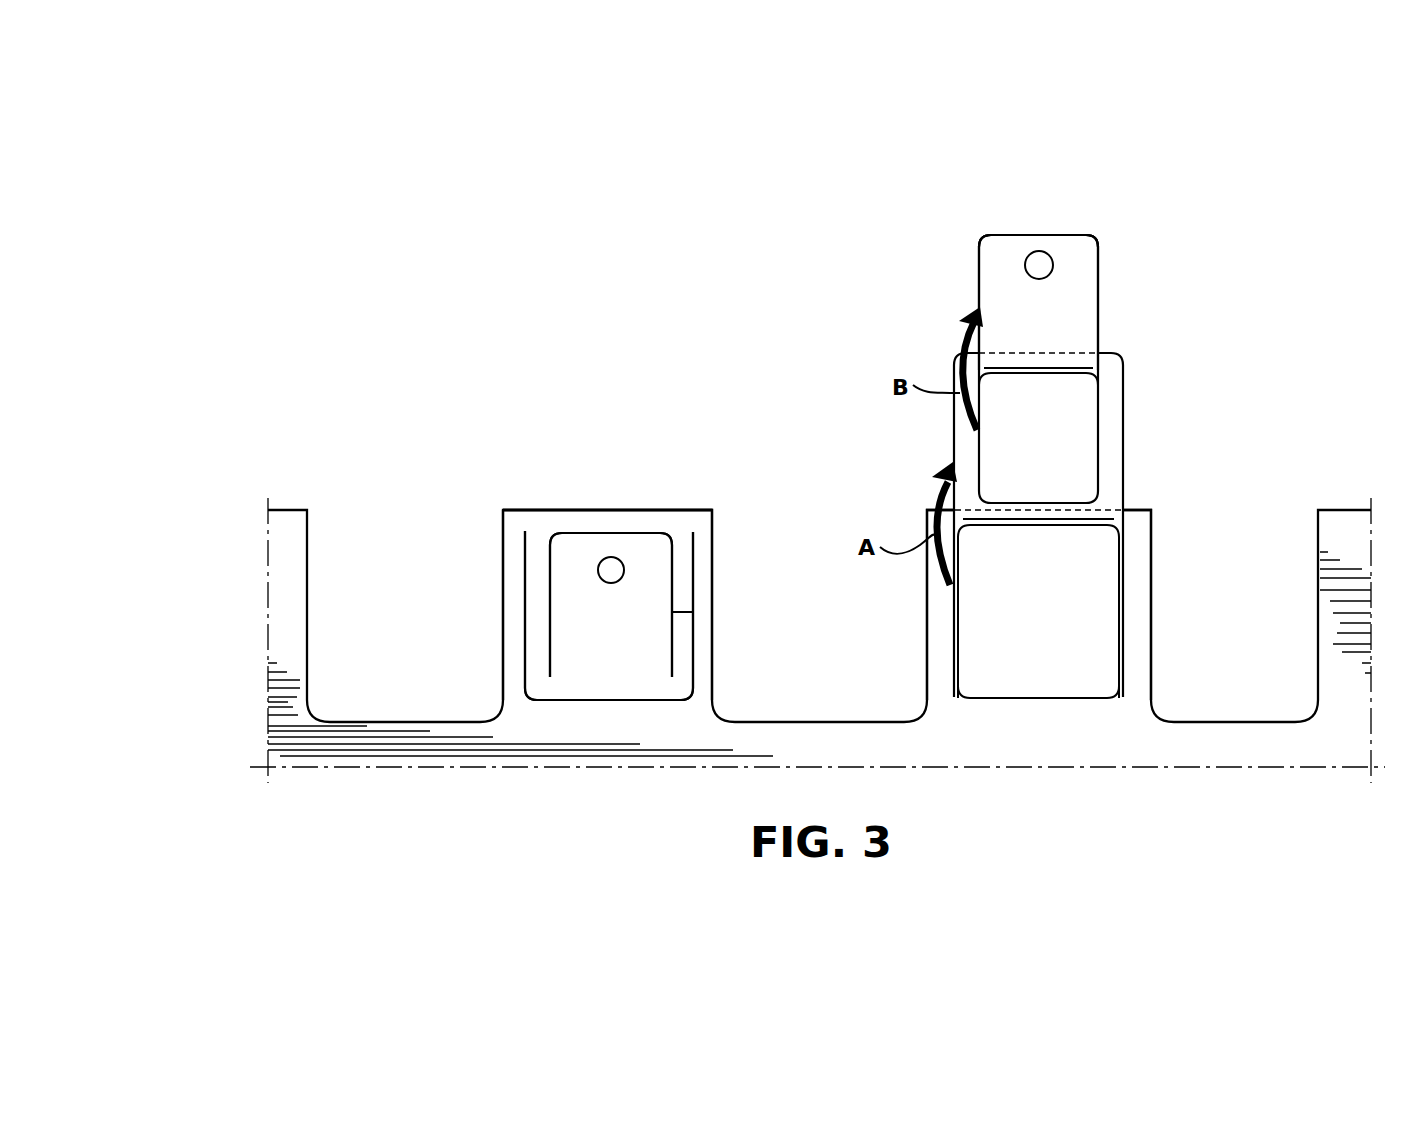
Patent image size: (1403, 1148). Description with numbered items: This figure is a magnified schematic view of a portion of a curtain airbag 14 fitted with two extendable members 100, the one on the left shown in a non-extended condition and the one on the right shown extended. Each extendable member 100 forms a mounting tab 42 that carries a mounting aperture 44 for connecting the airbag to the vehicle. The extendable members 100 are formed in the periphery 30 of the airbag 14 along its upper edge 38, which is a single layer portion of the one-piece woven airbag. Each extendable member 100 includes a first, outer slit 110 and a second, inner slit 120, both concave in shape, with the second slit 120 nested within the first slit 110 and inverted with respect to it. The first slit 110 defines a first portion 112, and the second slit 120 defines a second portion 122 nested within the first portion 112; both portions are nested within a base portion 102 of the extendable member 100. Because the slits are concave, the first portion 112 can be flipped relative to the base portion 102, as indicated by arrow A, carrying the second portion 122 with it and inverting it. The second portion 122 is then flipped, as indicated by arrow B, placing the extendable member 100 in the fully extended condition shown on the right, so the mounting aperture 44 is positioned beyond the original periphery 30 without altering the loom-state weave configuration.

The airbag 14 is at (477, 343).
The periphery 30 is at (300, 743).
The upper edge 38 is at (287, 690).
The mounting tab 42 is at (667, 483).
The mounting aperture 44 is at (612, 568).
The extendable member 100 is at (559, 462).
The base portion 102 is at (703, 663).
The first slit 110 is at (532, 638).
The first portion 112 is at (538, 610).
The second slit 120 is at (692, 612).
The second portion 122 is at (587, 607).